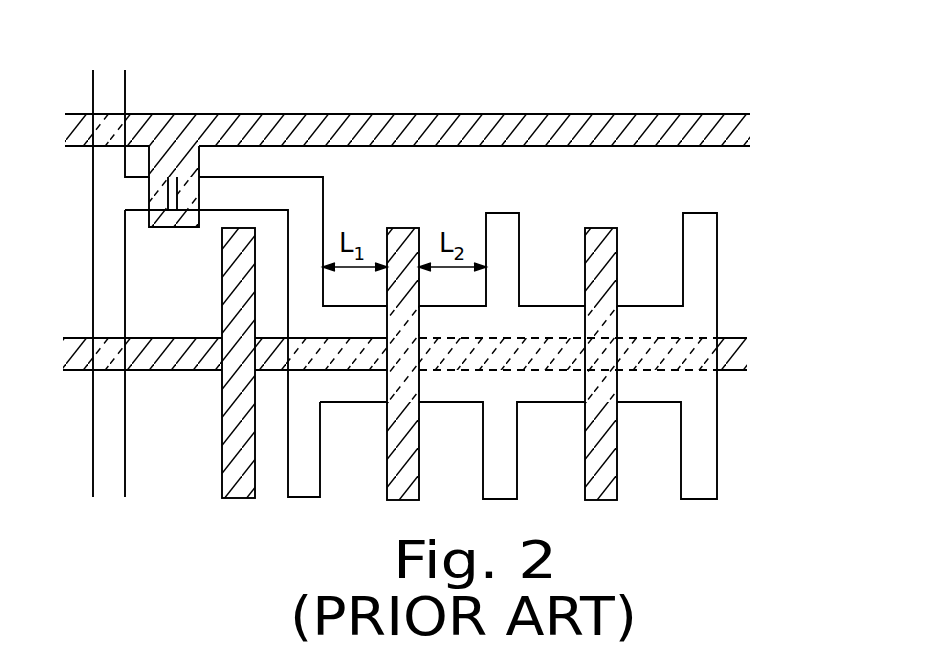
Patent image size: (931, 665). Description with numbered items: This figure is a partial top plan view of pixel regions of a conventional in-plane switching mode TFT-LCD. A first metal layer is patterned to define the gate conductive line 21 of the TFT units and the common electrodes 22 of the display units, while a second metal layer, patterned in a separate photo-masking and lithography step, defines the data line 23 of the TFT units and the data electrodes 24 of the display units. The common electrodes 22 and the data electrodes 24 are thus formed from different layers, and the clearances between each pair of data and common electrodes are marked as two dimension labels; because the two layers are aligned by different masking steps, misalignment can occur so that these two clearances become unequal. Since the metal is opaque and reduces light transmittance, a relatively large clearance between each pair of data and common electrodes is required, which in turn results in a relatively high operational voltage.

The gate conductive line 21 is at (575, 118).
The common electrodes 22 is at (185, 360).
The data line 23 is at (110, 88).
The data electrodes 24 is at (312, 222).